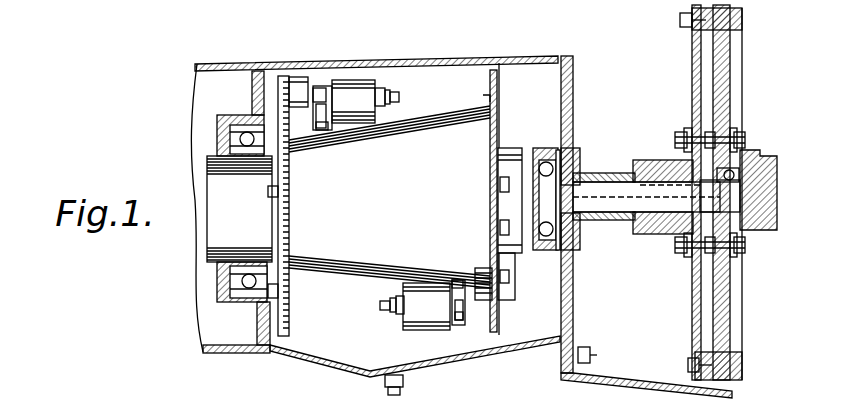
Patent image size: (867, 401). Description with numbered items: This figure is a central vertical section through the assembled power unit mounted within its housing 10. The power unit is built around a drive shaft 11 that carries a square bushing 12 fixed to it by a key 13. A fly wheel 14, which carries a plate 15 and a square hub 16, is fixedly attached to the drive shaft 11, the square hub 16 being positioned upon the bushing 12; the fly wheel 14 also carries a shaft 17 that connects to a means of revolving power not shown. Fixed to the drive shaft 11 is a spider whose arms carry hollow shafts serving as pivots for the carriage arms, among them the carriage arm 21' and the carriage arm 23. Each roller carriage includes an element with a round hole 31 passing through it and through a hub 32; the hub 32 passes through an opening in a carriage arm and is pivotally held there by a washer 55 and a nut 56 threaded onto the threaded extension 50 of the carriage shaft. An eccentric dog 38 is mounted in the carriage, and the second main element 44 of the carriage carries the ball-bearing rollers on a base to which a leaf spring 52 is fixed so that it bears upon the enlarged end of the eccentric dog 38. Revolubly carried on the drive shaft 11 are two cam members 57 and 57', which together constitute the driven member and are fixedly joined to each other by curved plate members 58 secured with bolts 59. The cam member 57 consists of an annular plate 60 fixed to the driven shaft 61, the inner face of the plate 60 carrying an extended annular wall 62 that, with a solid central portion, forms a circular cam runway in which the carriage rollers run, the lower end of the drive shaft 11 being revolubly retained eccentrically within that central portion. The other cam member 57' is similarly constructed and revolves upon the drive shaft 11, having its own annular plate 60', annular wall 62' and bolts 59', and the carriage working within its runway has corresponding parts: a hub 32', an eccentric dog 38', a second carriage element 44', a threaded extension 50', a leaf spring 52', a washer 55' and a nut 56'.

The housing 10 is at (348, 376).
The drive shaft 11 is at (591, 192).
The square bushing 12 is at (647, 160).
The key 13 is at (663, 183).
The fly wheel 14 is at (731, 316).
The plate 15 is at (692, 305).
The square hub 16 is at (668, 235).
The shaft 17 is at (768, 167).
The carriage arm 21' is at (426, 277).
The carriage arm 23 is at (353, 101).
The round hole 31 is at (409, 388).
The hub 32 is at (343, 81).
The lower bracket 32' is at (442, 322).
The eccentric dog 38 is at (306, 80).
The lower pole piece 38' is at (457, 350).
The second main element of the carriage 44 is at (329, 65).
The lower spacer 44' is at (484, 346).
The threaded extension 50 is at (414, 94).
The lower bolt head 50' is at (365, 307).
The leaf spring 52 is at (324, 152).
The lower clamp 52' is at (462, 256).
The washer 55 is at (399, 67).
The lower nut 55' is at (387, 330).
The nut 56 is at (402, 85).
The lower washer 56' is at (372, 317).
The cam member 57 is at (374, 218).
The cam member 57' is at (615, 227).
The curved plate members 58 is at (435, 142).
The bolts 59 is at (257, 242).
The bolt 59' is at (526, 233).
The annular plate 60 is at (305, 206).
The right end plate 60' is at (472, 201).
The driven shaft 61 is at (214, 180).
The extended annular wall 62 is at (278, 70).
The lower block 62' is at (473, 250).